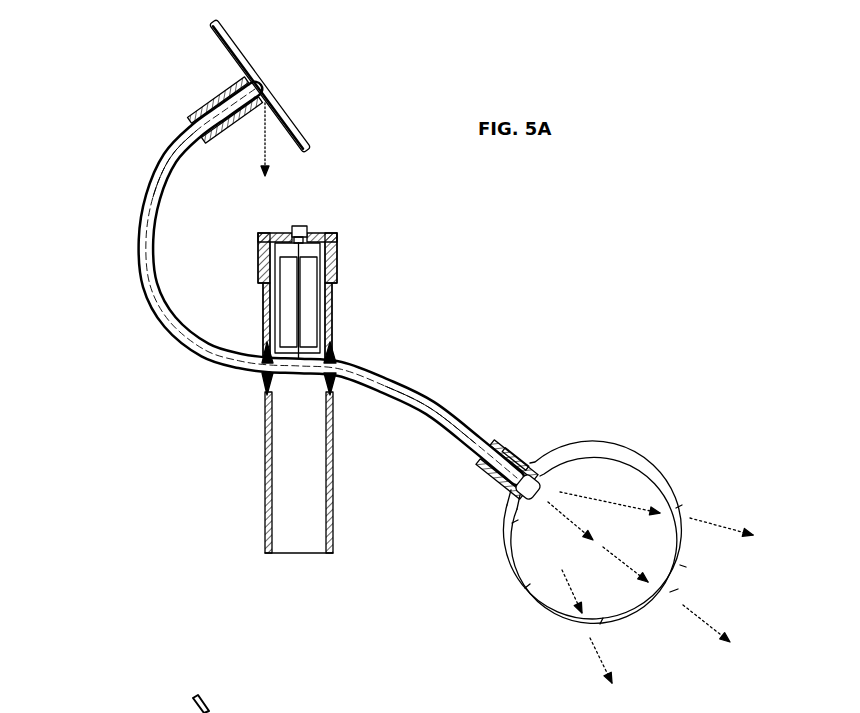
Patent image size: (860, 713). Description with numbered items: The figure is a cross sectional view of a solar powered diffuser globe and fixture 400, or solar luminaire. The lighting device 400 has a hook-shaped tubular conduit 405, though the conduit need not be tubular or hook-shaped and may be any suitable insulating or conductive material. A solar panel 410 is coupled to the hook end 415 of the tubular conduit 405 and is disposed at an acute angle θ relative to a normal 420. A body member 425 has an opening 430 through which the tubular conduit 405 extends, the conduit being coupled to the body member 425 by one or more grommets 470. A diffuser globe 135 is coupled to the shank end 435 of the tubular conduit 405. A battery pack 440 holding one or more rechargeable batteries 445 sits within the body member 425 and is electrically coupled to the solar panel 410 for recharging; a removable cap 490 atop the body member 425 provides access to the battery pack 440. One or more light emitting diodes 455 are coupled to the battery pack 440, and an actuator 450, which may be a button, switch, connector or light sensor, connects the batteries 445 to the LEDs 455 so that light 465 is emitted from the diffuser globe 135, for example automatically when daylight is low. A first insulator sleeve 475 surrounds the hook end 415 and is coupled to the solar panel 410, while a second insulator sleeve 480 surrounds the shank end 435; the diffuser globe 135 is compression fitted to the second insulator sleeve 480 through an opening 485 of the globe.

The diffuser globe 135 is at (680, 468).
The solar powered diffuser globe and fixture 400 is at (489, 343).
The tubular conduit 405 is at (137, 247).
The solar panel 410 is at (272, 93).
The hook end 415 is at (155, 144).
The normal 420 is at (263, 130).
The body member 425 is at (265, 453).
The opening 430 is at (347, 353).
The shank end 435 is at (460, 454).
The battery pack 440 is at (276, 298).
The rechargeable batteries 445 is at (320, 310).
The actuator 450 is at (292, 227).
The light emitting diodes 455 is at (528, 490).
The light 465 is at (650, 587).
The grommets 470 is at (262, 379).
The first insulator sleeve 475 is at (214, 100).
The second insulator sleeve 480 is at (480, 457).
The opening of the diffuser globe 485 is at (545, 470).
The removable cap 490 is at (338, 265).